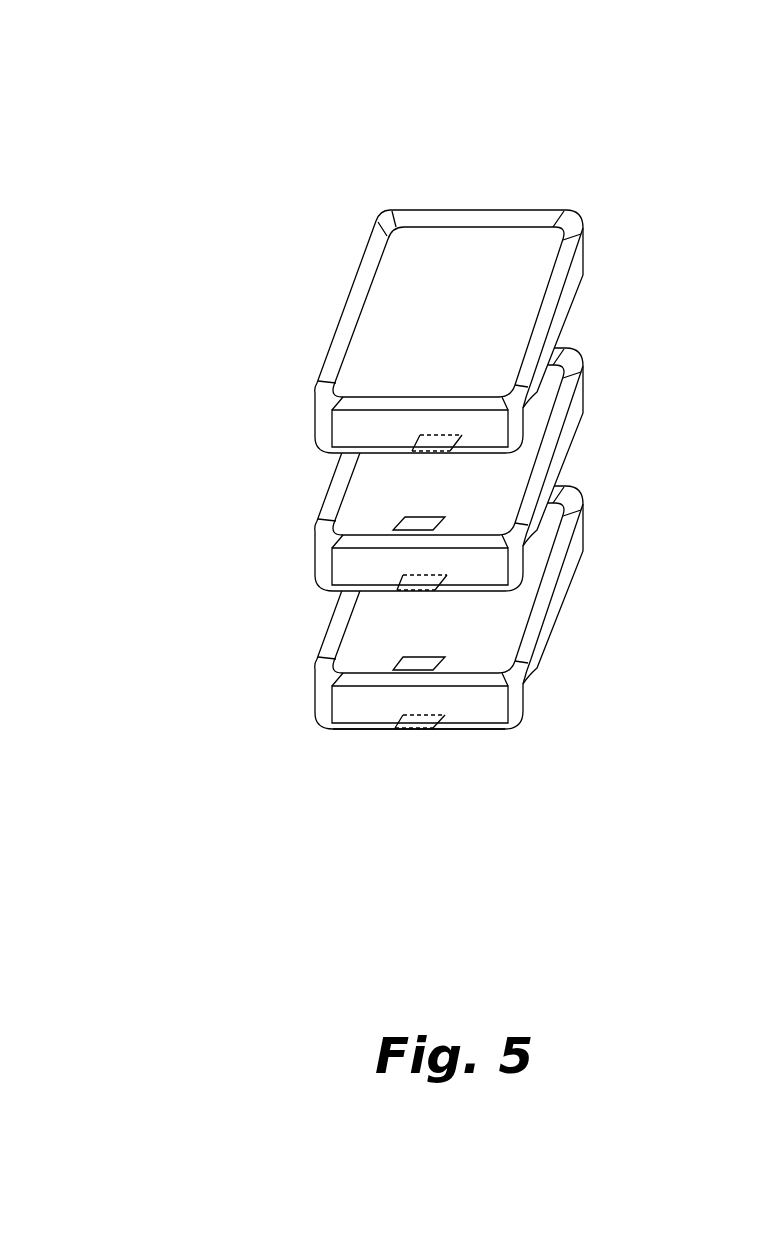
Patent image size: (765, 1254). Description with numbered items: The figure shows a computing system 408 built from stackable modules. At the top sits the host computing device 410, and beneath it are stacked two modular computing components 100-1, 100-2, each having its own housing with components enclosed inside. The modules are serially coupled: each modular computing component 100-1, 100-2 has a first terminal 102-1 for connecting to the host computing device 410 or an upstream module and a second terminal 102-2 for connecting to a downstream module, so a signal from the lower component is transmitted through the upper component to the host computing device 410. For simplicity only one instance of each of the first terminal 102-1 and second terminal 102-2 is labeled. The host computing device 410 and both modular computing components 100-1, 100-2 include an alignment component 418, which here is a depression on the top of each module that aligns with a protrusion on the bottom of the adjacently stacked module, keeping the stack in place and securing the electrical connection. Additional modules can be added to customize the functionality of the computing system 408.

The computing system 408 is at (348, 412).
The host computing device 410 is at (363, 287).
The modular computing component 100-1 is at (332, 503).
The modular computing component 100-2 is at (428, 644).
The first terminal 102-1 is at (423, 667).
The second terminal 102-2 is at (423, 720).
The alignment component 418 is at (358, 725).